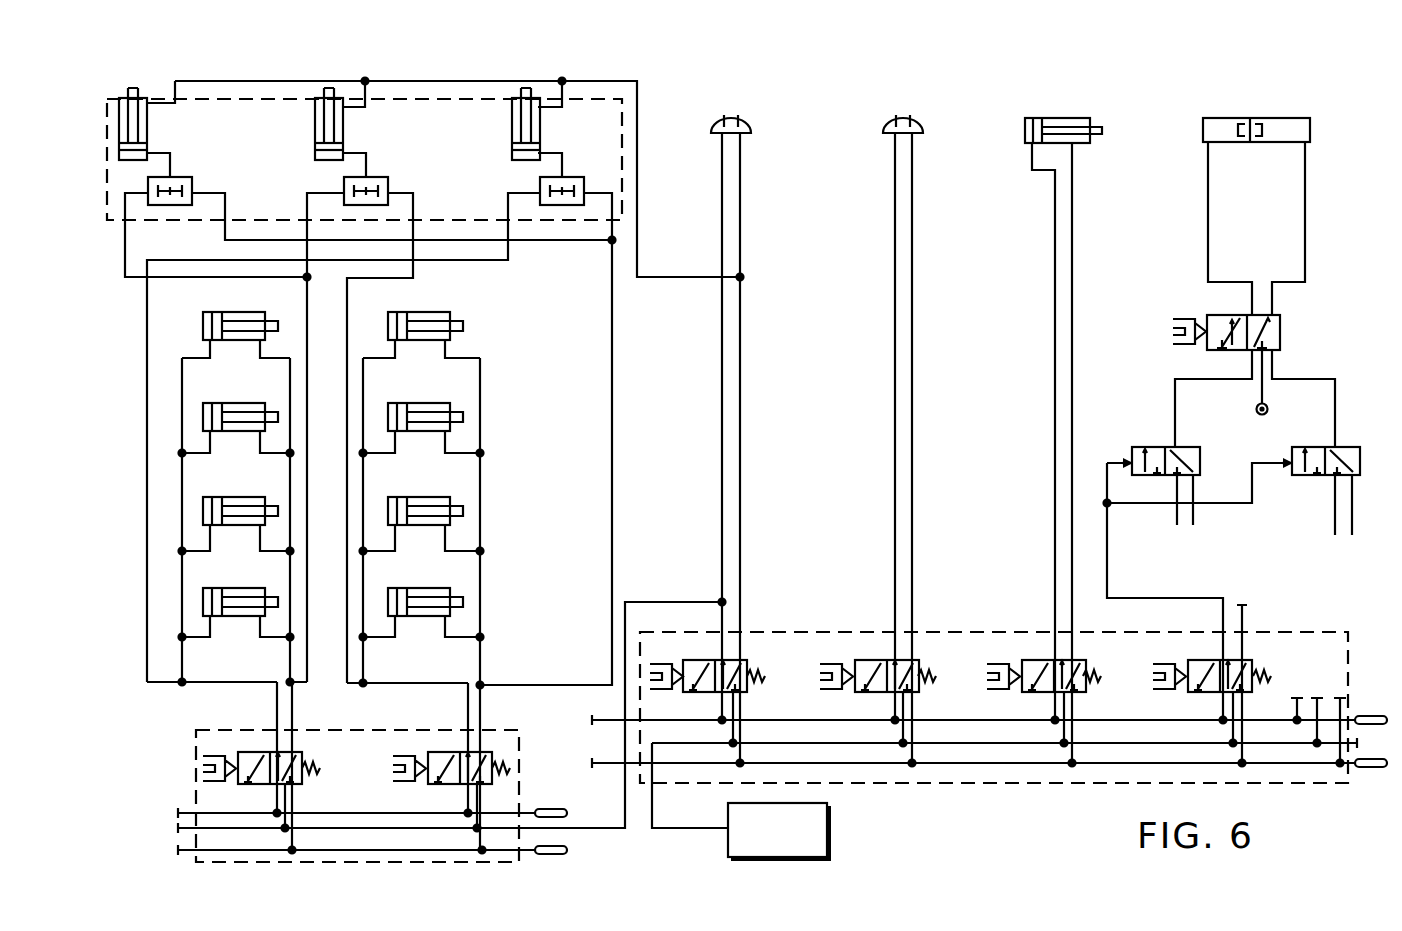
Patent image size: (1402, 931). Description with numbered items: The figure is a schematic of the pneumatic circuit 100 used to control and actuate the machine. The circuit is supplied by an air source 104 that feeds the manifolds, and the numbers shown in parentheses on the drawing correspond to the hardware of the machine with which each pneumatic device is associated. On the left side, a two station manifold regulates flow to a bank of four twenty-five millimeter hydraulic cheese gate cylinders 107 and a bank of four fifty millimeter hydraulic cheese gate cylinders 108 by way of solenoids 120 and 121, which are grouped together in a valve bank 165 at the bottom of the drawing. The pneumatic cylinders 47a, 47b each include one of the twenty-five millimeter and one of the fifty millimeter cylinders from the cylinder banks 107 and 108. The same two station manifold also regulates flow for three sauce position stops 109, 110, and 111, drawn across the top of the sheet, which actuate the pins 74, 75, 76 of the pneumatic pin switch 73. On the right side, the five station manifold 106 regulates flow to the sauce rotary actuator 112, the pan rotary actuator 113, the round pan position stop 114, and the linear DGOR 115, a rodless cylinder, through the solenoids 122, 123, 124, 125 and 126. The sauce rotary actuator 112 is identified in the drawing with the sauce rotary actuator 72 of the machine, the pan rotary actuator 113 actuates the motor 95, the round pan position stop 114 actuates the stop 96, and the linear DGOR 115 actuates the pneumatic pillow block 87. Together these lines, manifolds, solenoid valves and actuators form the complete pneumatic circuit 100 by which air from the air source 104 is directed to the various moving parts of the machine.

The pneumatic circuit 100 is at (963, 815).
The pneumatic pin switch 73 is at (580, 100).
The pin 74 is at (365, 166).
The pin 75 is at (362, 369).
The pin 76 is at (380, 370).
The sauce position stop 109 is at (152, 130).
The sauce position stop 110 is at (348, 130).
The sauce position stop 111 is at (542, 130).
The bank of 25mm hydraulic cheese gate cylinders 107 is at (190, 305).
The bank of 50mm hydraulic cheese gate cylinders 108 is at (460, 303).
The pneumatic cylinder 47a is at (203, 604).
The pneumatic cylinder 47b is at (415, 568).
The cheese gate valve bank 165 is at (500, 730).
The solenoid 120 is at (297, 752).
The solenoid 121 is at (452, 752).
The sauce rotary actuator 72 is at (729, 397).
The sauce rotary actuator 112 is at (728, 426).
The motor 95 is at (918, 397).
The pan rotary actuator 113 is at (905, 426).
The stop 96 is at (1090, 408).
The round pan position stop 114 is at (1063, 428).
The pneumatic pillow block 87 is at (1290, 193).
The linear DGOR 115 is at (1256, 204).
The solenoid 126 is at (1278, 313).
The five station manifold 106 is at (1286, 632).
The solenoid 122 is at (700, 660).
The solenoid 123 is at (872, 660).
The solenoid 124 is at (1040, 660).
The solenoid 125 is at (1203, 660).
The air source 104 is at (828, 830).